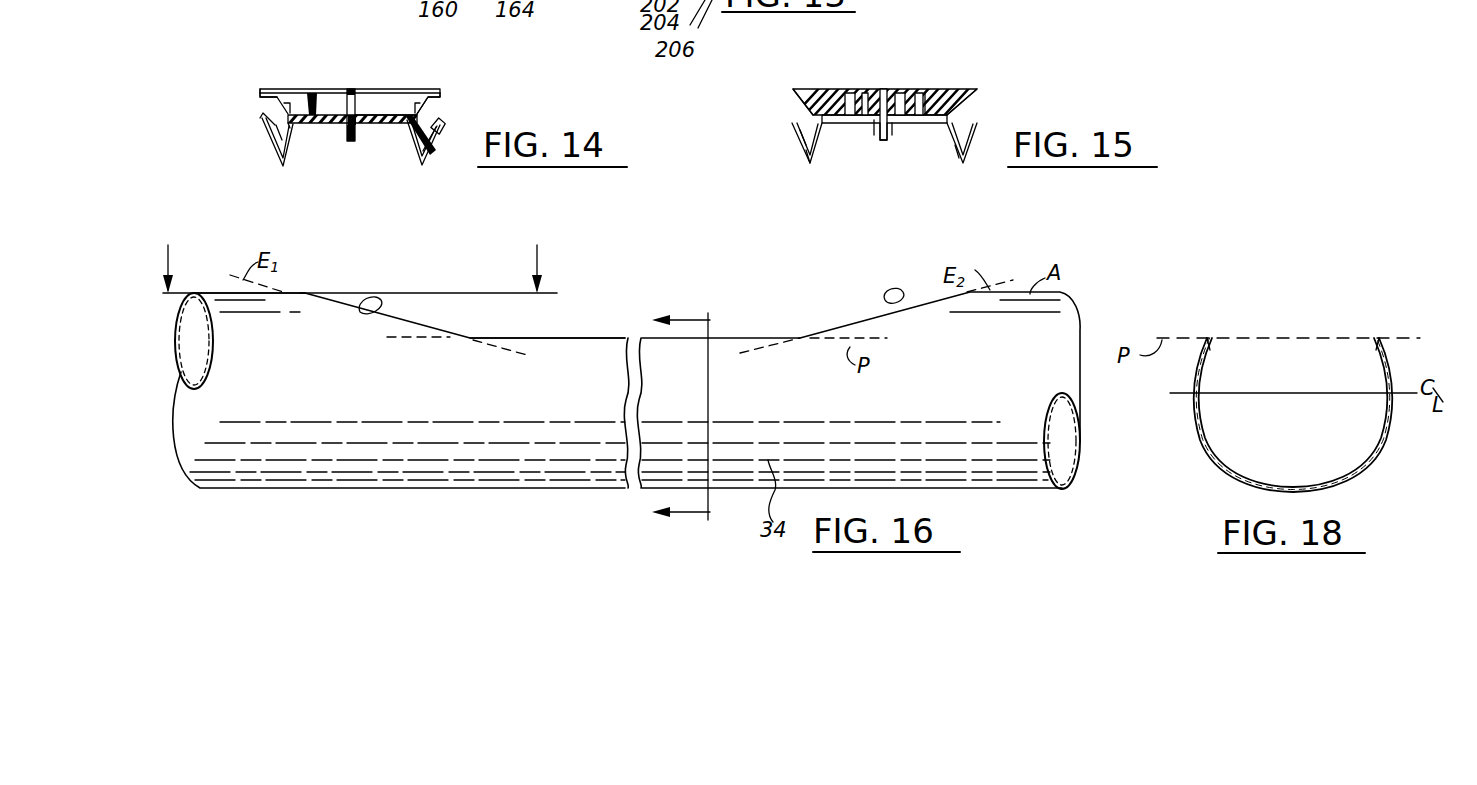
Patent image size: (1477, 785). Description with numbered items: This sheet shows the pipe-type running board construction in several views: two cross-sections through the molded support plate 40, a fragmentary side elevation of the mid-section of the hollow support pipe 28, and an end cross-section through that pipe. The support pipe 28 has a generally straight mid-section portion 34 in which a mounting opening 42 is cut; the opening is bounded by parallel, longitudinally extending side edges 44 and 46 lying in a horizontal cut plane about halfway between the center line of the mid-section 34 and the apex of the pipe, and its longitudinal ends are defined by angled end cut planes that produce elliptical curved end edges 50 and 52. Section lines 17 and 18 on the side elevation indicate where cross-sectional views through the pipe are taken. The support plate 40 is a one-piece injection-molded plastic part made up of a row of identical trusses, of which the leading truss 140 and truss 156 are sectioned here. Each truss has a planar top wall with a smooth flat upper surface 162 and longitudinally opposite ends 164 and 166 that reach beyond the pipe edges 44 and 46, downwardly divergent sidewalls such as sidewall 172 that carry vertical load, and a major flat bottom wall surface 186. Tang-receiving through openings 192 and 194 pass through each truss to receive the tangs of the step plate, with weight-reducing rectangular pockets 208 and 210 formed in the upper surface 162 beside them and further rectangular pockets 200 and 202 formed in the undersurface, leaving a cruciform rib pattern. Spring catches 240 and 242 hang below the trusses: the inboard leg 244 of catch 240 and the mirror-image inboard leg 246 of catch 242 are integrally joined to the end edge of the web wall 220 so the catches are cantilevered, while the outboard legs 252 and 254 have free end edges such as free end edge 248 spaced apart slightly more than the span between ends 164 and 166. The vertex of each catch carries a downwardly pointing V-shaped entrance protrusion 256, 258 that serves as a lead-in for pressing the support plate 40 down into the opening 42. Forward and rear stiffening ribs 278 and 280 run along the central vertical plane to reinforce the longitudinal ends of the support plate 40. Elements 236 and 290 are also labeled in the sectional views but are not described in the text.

In FIG. 16, the support pipe 28 is at (652, 488).
In FIG. 18, the support pipe 28 is at (1208, 447).
In FIG. 16, the mid-section portion 34 is at (430, 460).
In FIG. 18, the mid-section portion 34 is at (1193, 372).
In FIG. 14, the support plate 40 is at (441, 89).
In FIG. 15, the support plate 40 is at (971, 89).
In FIG. 18, the mounting opening 42 is at (1303, 370).
In FIG. 16, the side edge 44 is at (603, 338).
In FIG. 18, the side edge 44 is at (1210, 345).
In FIG. 18, the side edge 46 is at (1375, 343).
In FIG. 16, the elliptical curved end edge 50 is at (362, 312).
In FIG. 16, the elliptical curved end edge 52 is at (897, 303).
In FIG. 16, the section line 17 is at (373, 267).
In FIG. 16, the section line 18 is at (680, 417).
In FIG. 14, the truss 140 is at (282, 88).
In FIG. 15, the truss 156 is at (880, 90).
In FIG. 15, the upper surface 162 is at (866, 96).
In FIG. 14, the end of top wall 164 is at (440, 100).
In FIG. 14, the end of top wall 166 is at (262, 96).
In FIG. 14, the sidewall 172 is at (330, 96).
In FIG. 15, the major flat bottom wall surface 186 is at (898, 128).
In FIG. 15, the tang-receiving through opening 192 is at (848, 95).
In FIG. 15, the tang-receiving through opening 194 is at (918, 98).
In FIG. 15, the rectangular pocket 200 is at (893, 138).
In FIG. 15, the rectangular pocket 202 is at (878, 120).
In FIG. 15, the weight-reducing rectangular pocket 208 is at (798, 90).
In FIG. 15, the weight-reducing rectangular pocket 210 is at (922, 100).
In FIG. 14, the web wall 220 is at (375, 116).
In FIG. 15, the web extension 236 is at (876, 138).
In FIG. 14, the spring catch 240 is at (438, 152).
In FIG. 15, the spring catch 240 is at (798, 147).
In FIG. 14, the spring catch 242 is at (270, 148).
In FIG. 15, the spring catch 242 is at (970, 148).
In FIG. 14, the inboard leg 244 is at (415, 140).
In FIG. 15, the inboard leg 244 is at (792, 120).
In FIG. 14, the inboard leg 246 is at (290, 128).
In FIG. 15, the inboard leg 246 is at (960, 130).
In FIG. 14, the free end edge 248 is at (443, 126).
In FIG. 14, the outboard leg 252 is at (440, 135).
In FIG. 14, the outboard leg 254 is at (266, 126).
In FIG. 15, the V-shaped entrance protrusion 256 is at (808, 165).
In FIG. 15, the V-shaped entrance protrusion 258 is at (950, 165).
In FIG. 14, the forward stiffening rib 278 is at (362, 120).
In FIG. 15, the rear stiffening rib 280 is at (886, 145).
In FIG. 14, the clip hook 290 is at (263, 118).